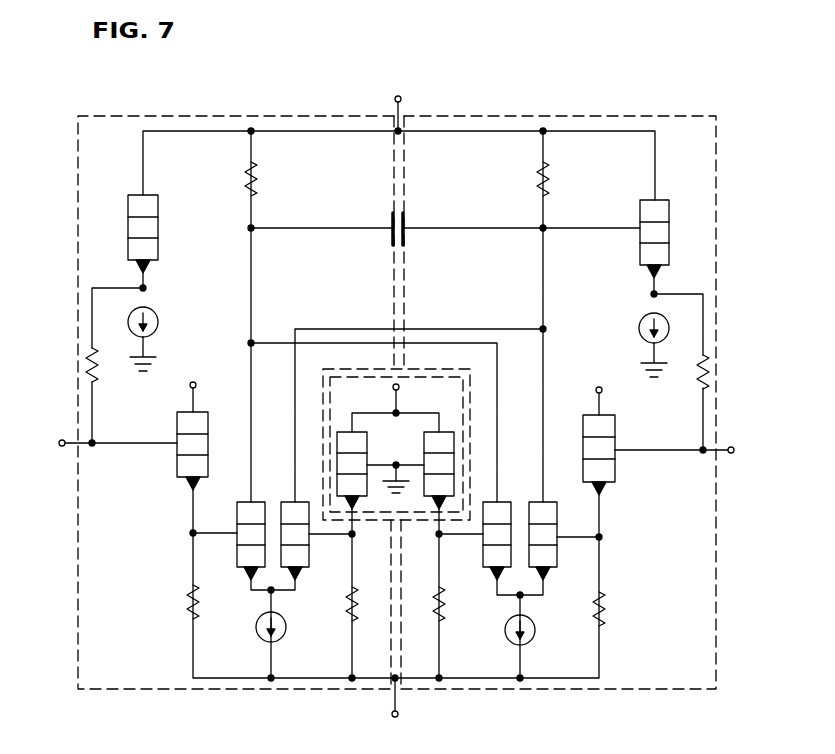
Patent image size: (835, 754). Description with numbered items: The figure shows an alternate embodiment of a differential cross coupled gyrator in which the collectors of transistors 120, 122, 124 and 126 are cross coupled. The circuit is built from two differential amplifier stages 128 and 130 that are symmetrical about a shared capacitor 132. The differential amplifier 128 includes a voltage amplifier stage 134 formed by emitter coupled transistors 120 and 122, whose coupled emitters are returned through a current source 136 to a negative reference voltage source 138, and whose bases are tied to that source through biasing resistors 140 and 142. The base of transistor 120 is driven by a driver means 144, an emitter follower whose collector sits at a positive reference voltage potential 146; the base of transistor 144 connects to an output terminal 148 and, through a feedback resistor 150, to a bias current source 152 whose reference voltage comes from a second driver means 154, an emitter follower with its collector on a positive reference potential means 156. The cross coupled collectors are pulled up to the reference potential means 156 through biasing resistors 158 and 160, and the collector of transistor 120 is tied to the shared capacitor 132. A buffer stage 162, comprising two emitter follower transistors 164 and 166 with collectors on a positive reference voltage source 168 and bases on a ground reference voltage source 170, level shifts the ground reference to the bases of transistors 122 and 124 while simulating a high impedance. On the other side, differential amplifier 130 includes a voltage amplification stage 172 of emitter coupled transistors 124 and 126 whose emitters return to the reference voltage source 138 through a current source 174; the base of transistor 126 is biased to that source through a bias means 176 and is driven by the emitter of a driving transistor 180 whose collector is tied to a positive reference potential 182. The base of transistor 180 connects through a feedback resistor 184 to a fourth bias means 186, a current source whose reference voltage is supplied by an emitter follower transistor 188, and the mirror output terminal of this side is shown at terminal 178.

The transistor 120 is at (236, 557).
The transistor 122 is at (309, 559).
The transistor 124 is at (482, 556).
The transistor 126 is at (557, 560).
The differential amplifier stage 128 is at (200, 116).
The differential amplifier stage 130 is at (590, 116).
The shared capacitor 132 is at (406, 221).
The voltage amplifier stage 134 is at (270, 498).
The current source 136 is at (257, 633).
The reference voltage source 138 is at (399, 716).
The biasing resistor 140 is at (186, 605).
The biasing resistor 142 is at (345, 605).
The driver means 144 is at (177, 421).
The reference voltage potential 146 is at (195, 382).
The output terminal 148 is at (59, 441).
The feedback resistor 150 is at (86, 366).
The bias current source 152 is at (156, 314).
The driver means 154 is at (159, 206).
The reference potential means 156 is at (402, 100).
The biasing resistor 158 is at (258, 181).
The biasing resistor 160 is at (537, 181).
The buffer stage 162 is at (372, 372).
The emitter follower transistor 164 is at (343, 430).
The emitter follower transistor 166 is at (448, 430).
The reference voltage source 168 is at (398, 384).
The reference voltage source 170 is at (392, 466).
The voltage amplification stage 172 is at (520, 506).
The current source 174 is at (534, 635).
The bias means 176 is at (606, 612).
The terminal 178 is at (734, 447).
The driving transistor 180 is at (616, 430).
The reference potential 182 is at (597, 388).
The feedback resistor 184 is at (709, 375).
The fourth bias means 186 is at (640, 321).
The emitter follower transistor 188 is at (638, 208).